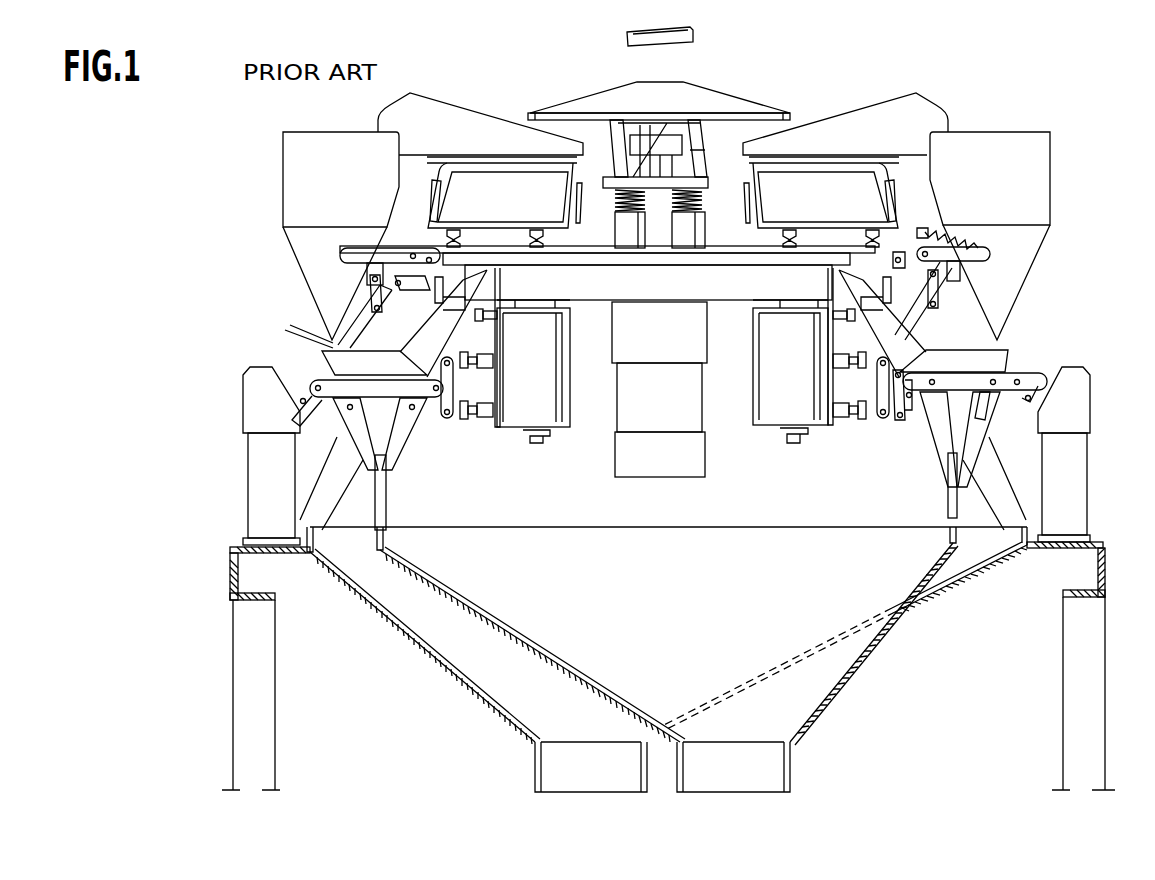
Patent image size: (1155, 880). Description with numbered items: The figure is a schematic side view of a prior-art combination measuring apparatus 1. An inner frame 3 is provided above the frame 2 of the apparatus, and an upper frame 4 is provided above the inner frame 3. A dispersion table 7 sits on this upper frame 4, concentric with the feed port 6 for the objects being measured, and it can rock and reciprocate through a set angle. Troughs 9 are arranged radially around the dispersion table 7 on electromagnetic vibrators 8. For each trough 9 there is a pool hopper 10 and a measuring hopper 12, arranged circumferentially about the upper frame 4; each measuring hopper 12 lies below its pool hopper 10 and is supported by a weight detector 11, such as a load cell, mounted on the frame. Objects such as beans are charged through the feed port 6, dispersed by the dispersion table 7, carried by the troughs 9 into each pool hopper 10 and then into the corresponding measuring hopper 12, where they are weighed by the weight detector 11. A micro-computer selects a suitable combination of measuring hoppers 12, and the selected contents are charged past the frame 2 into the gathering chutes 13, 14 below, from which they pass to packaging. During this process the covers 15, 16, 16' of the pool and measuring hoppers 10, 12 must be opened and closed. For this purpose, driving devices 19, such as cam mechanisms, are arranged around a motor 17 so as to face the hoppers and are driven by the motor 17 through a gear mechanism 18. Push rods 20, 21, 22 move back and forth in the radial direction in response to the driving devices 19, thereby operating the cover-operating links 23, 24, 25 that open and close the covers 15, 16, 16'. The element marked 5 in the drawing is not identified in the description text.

The combination measuring apparatus 1 is at (1119, 150).
The frame 2 is at (245, 681).
The inner frame 3 is at (988, 450).
The upper frame 4 is at (596, 258).
The dispersion table drive 5 is at (677, 143).
The feed port 6 is at (640, 39).
The dispersion table 7 is at (722, 104).
The electromagnetic vibrator 8 is at (777, 200).
The trough 9 is at (459, 124).
The pool hopper 10 is at (318, 266).
The weight detector 11 is at (262, 487).
The measuring hopper 12 is at (375, 432).
The gathering chute 13 is at (462, 605).
The gathering chute 14 is at (494, 690).
The cover 15 is at (350, 308).
The cover 16 is at (666, 491).
The cover 16' is at (269, 429).
The motor 17 is at (665, 462).
The gear mechanism 18 is at (741, 288).
The driving device 19 is at (512, 412).
The push rod 20 is at (498, 420).
The push rod 21 is at (831, 416).
The push rod 22 is at (470, 413).
The cover-operating link 23 is at (960, 292).
The cover-operating link 24 is at (890, 420).
The cover-operating link 25 is at (880, 363).